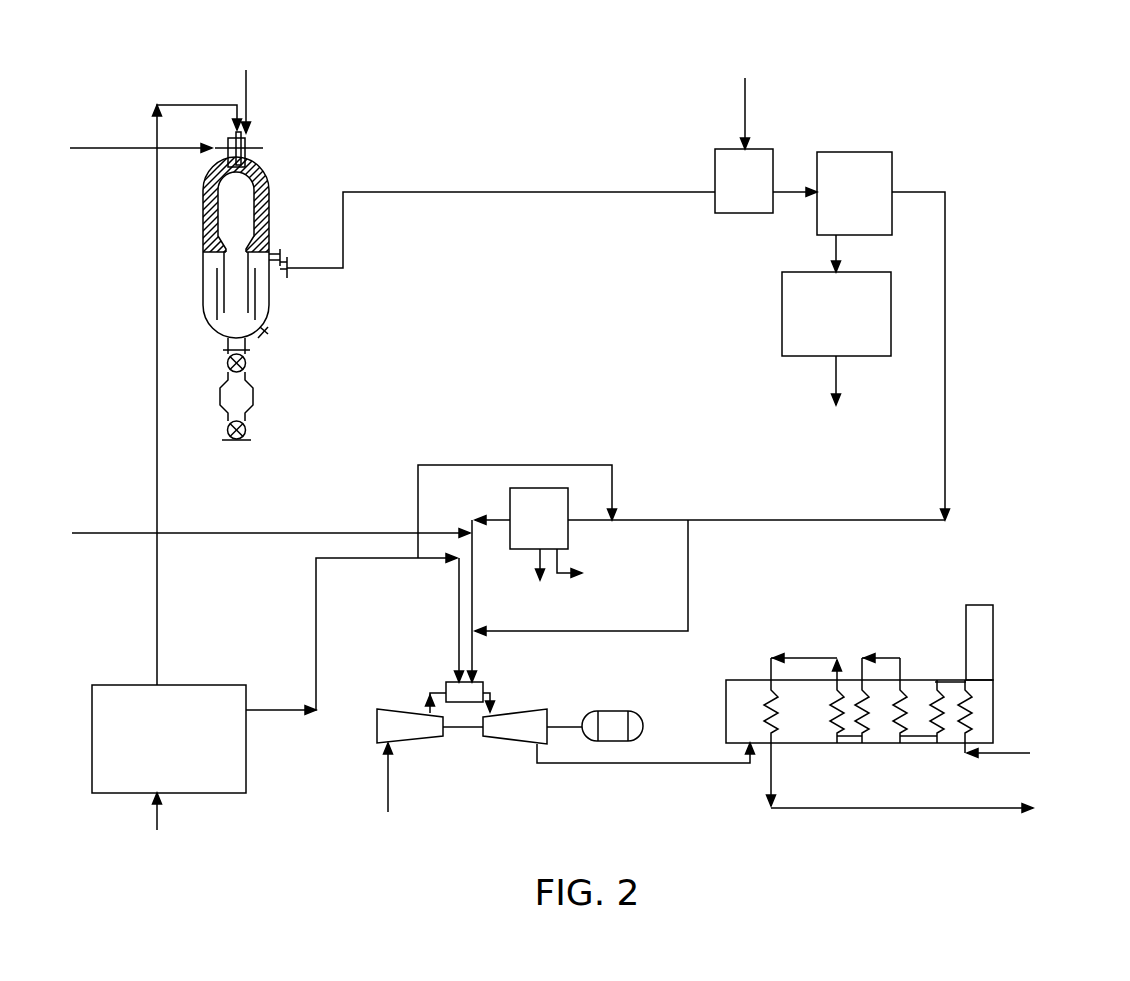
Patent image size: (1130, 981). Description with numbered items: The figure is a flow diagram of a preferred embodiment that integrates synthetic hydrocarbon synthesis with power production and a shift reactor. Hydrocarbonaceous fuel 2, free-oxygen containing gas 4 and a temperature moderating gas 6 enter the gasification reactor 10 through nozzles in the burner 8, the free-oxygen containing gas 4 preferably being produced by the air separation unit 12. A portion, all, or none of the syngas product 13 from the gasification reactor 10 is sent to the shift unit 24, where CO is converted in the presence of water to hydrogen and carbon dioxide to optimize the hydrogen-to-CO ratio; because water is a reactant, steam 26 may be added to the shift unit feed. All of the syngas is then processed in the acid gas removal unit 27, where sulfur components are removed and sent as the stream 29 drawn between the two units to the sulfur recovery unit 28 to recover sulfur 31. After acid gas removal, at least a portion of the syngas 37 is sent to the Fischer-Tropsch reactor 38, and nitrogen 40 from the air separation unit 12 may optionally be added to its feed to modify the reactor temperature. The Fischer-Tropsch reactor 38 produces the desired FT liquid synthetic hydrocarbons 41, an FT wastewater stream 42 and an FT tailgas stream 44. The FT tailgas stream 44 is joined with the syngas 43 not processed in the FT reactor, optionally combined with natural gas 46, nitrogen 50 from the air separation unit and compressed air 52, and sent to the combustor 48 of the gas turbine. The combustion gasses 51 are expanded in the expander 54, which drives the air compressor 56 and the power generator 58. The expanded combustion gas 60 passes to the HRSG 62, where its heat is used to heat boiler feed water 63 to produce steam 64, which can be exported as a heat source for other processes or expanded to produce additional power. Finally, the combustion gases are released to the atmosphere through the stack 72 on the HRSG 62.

The hydrocarbonaceous fuel 2 is at (133, 149).
The free-oxygen containing gas 4 is at (197, 382).
The temperature moderating gas 6 is at (243, 86).
The burner 8 is at (263, 148).
The gasification reactor 10 is at (282, 189).
The air separation unit 12 is at (143, 756).
The syngas product 13 is at (501, 216).
The shift unit 24 is at (730, 194).
The steam 26 is at (745, 100).
The acid gas removal unit 27 is at (841, 202).
The sulfur recovery unit 28 is at (822, 331).
The acid gas stream 29 is at (823, 253).
The sulfur 31 is at (836, 395).
The syngas 37 is at (756, 506).
The Fischer-Tropsch reactor 38 is at (526, 531).
The nitrogen 40 is at (517, 500).
The FT liquid synthetic hydrocarbons 41 is at (534, 580).
The FT wastewater stream 42 is at (584, 568).
The syngas not processed in the FT reactor 43 is at (581, 578).
The FT tailgas stream 44 is at (492, 506).
The natural gas 46 is at (271, 522).
The combustor 48 is at (493, 668).
The nitrogen 50 is at (448, 601).
The combustion gasses 51 is at (501, 693).
The compressed air 52 is at (418, 694).
The expander 54 is at (501, 739).
The air compressor 56 is at (376, 739).
The power generator 58 is at (620, 700).
The expanded combustion gas 60 is at (646, 752).
The HRSG 62 is at (912, 699).
The boiler feed water 63 is at (1013, 752).
The steam 64 is at (900, 778).
The stack 72 is at (1017, 642).